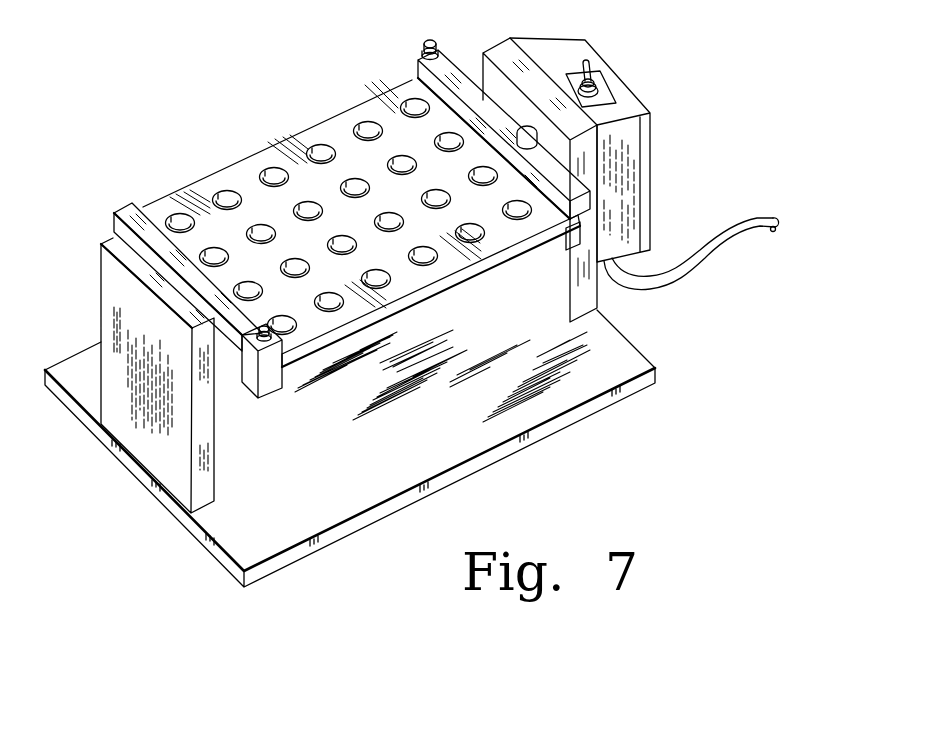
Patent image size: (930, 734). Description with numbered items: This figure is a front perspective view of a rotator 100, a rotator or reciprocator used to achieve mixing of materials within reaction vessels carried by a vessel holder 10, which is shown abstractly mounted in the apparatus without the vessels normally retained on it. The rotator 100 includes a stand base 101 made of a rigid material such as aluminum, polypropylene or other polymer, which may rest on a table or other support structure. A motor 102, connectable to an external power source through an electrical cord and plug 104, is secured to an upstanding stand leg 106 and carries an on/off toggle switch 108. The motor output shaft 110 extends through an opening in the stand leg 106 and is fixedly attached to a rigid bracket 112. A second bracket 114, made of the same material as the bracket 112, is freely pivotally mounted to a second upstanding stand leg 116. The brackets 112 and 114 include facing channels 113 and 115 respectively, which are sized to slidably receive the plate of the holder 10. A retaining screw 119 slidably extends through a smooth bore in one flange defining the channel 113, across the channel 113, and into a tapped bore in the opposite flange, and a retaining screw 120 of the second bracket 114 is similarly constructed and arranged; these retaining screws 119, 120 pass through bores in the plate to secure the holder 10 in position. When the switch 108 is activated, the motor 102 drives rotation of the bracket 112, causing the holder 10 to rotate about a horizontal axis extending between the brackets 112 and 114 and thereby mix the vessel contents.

The holder 10 is at (243, 157).
The rotator 100 is at (412, 293).
The stand base 101 is at (517, 452).
The motor 102 is at (652, 148).
The electrical cord and plug 104 is at (752, 222).
The upstanding stand leg 106 is at (596, 291).
The on/off toggle switch 108 is at (594, 74).
The motor output shaft 110 is at (526, 126).
The bracket 112 is at (456, 74).
The channel 113 is at (572, 250).
The second bracket 114 is at (134, 210).
The channel 115 is at (280, 378).
The upstanding stand leg 116 is at (209, 440).
The retaining screw 119 is at (428, 43).
The retaining screw 120 is at (261, 352).